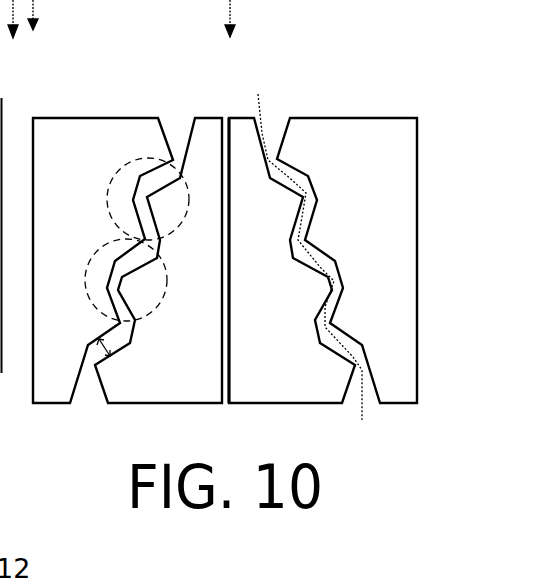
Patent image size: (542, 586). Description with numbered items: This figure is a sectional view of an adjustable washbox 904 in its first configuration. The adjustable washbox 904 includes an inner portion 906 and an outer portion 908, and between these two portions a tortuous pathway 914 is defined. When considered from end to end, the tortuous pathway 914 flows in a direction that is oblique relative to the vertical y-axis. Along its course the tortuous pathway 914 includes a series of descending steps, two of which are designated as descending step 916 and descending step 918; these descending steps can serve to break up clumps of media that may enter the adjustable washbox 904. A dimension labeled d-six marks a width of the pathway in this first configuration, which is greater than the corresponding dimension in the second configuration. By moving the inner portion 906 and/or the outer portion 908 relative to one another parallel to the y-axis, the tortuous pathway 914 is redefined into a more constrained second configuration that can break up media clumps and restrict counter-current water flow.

The adjustable washbox 904 is at (119, 95).
The inner portion 906 is at (202, 348).
The outer portion 908 is at (82, 153).
The tortuous pathway 914 is at (301, 246).
The descending step 916 is at (106, 200).
The descending step 918 is at (90, 264).